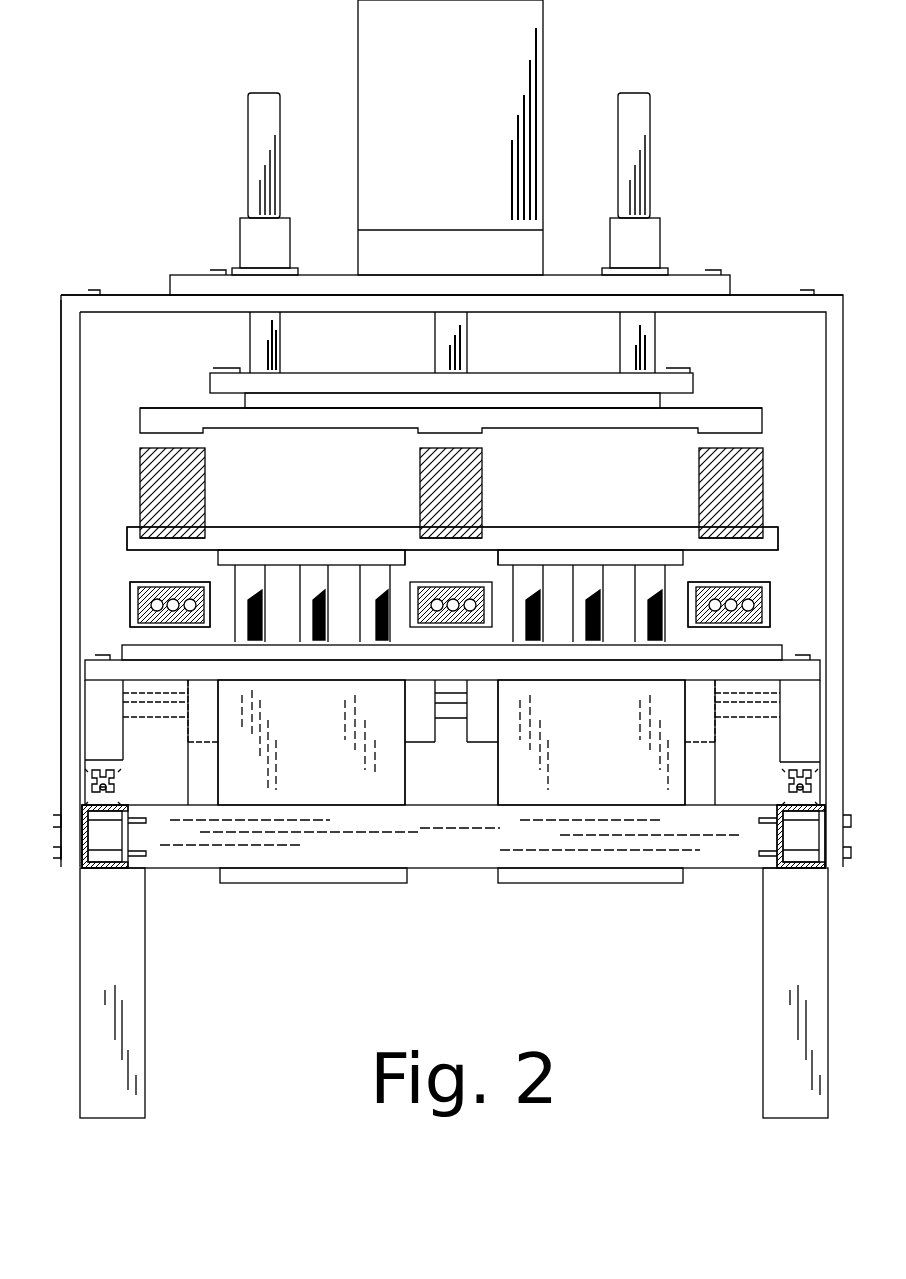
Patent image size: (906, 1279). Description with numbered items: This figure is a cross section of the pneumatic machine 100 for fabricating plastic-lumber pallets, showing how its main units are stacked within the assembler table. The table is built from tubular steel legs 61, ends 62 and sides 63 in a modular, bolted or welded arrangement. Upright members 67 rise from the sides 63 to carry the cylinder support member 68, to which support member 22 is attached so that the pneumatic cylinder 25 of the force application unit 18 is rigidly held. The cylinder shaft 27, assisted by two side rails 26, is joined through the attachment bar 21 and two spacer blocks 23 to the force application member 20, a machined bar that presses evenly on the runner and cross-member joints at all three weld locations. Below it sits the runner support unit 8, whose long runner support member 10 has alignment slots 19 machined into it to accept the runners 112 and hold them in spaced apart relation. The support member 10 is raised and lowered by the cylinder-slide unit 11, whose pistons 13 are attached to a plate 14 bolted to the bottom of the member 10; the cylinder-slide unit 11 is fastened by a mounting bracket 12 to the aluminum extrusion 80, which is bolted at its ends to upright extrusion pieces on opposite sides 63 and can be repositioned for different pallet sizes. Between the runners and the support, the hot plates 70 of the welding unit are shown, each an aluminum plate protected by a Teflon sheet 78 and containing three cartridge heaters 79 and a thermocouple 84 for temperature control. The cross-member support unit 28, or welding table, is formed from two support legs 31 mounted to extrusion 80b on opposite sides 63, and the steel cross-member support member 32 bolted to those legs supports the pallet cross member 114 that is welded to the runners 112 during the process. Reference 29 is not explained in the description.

The machine 100 is at (150, 108).
The force application unit 18 is at (755, 180).
The cylinder support member 68 is at (117, 294).
The upright members 67 is at (71, 370).
The pneumatic cylinder 25 is at (470, 123).
The cylinder support member 22 is at (698, 280).
The side rails 26 is at (262, 134).
The cylinder shaft 27 is at (437, 345).
The spacer blocks 23 is at (210, 400).
The attachment bar 21 is at (504, 375).
The force application member 20 is at (724, 413).
The upper assembly 29 is at (735, 378).
The runners 112 is at (206, 464).
The alignment slots 19 is at (150, 520).
The runner support unit 8 is at (790, 505).
The runner support member 10 is at (298, 536).
The pistons 13 is at (238, 579).
The plate 14 is at (400, 552).
The cross-member support member 32 is at (590, 662).
The Teflon sheet 78 is at (130, 599).
The cartridge heaters 79 is at (470, 590).
The thermocouple 84 is at (716, 583).
The hot plate 70 is at (144, 582).
The cross member 114 is at (134, 640).
The cross-member support unit 28 is at (794, 630).
The support legs 31 is at (147, 755).
The aluminum extrusion 80 is at (160, 712).
The mounting bracket 12 is at (200, 745).
The cylinder-slide unit 11 is at (328, 758).
The extrusion 80b is at (784, 787).
The ends 62 is at (439, 866).
The sides 63 is at (110, 870).
The legs 61 is at (142, 967).